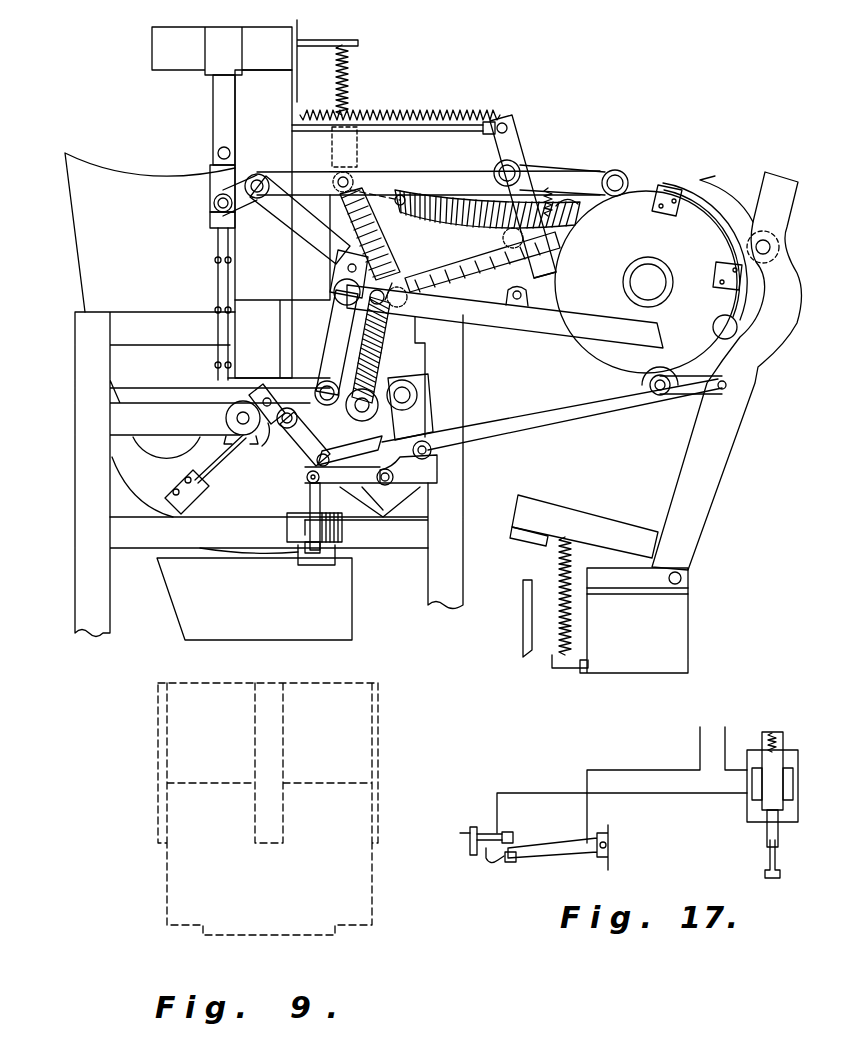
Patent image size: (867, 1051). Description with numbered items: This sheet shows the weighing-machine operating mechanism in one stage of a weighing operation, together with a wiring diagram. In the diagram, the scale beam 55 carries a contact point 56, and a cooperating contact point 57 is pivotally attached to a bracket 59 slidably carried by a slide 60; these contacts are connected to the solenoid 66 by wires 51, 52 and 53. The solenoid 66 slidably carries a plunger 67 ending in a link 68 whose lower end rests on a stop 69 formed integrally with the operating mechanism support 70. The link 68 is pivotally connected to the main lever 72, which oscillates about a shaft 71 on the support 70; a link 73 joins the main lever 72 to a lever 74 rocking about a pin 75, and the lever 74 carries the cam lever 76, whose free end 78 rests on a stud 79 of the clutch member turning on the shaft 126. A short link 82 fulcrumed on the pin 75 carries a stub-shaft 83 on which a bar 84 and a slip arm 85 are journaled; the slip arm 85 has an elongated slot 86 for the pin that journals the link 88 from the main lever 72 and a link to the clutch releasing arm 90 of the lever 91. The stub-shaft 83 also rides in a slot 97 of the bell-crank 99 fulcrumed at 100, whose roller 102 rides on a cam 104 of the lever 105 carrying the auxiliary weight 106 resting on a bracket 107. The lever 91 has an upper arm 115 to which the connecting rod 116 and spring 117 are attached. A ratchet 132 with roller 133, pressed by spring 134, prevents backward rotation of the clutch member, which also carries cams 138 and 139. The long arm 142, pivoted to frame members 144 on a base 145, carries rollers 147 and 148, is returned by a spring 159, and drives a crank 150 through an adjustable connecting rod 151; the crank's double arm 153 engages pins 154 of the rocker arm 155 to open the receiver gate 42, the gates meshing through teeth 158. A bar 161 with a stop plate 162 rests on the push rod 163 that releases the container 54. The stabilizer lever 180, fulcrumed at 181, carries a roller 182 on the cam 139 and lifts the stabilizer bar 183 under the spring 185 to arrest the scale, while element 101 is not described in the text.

In FIG. 9, the receiver gate 42 is at (208, 464).
In FIG. 17, the wire 51 is at (664, 793).
In FIG. 17, the wire 52 is at (645, 770).
In FIG. 17, the wire 53 is at (728, 740).
In FIG. 17, the container 54 is at (360, 756).
In FIG. 17, the beam 55 is at (568, 853).
In FIG. 17, the contact point 56 is at (510, 863).
In FIG. 17, the contact point 57 is at (514, 836).
In FIG. 17, the bracket 59 is at (486, 856).
In FIG. 17, the slide 60 is at (460, 833).
In FIG. 17, the solenoid 66 is at (792, 778).
In FIG. 9, the plunger 67 is at (213, 101).
In FIG. 17, the plunger 67 is at (780, 832).
In FIG. 9, the link 68 is at (212, 181).
In FIG. 17, the link 68 is at (780, 856).
In FIG. 9, the stop 69 is at (212, 215).
In FIG. 9, the operating mechanism support 70 is at (272, 271).
In FIG. 9, the shaft 71 is at (494, 176).
In FIG. 9, the main lever 72 is at (458, 187).
In FIG. 9, the link 73 is at (290, 226).
In FIG. 9, the lever 74 is at (328, 340).
In FIG. 9, the pin 75 is at (322, 385).
In FIG. 9, the cam lever 76 is at (507, 321).
In FIG. 9, the free end 78 is at (655, 335).
In FIG. 9, the stud 79 is at (713, 325).
In FIG. 9, the short link 82 is at (298, 418).
In FIG. 9, the stub-shaft 83 is at (360, 412).
In FIG. 9, the bar 84 is at (335, 290).
In FIG. 9, the slip arm 85 is at (386, 356).
In FIG. 9, the elongated slot 86 is at (390, 330).
In FIG. 9, the link 88 is at (378, 238).
In FIG. 9, the clutch releasing arm 90 is at (550, 268).
In FIG. 9, the lever 91 is at (500, 200).
In FIG. 9, the slot 97 is at (378, 450).
In FIG. 9, the bell-crank 99 is at (410, 385).
In FIG. 9, the fulcrum 100 is at (410, 395).
In FIG. 9, the block 101 is at (418, 416).
In FIG. 9, the roller 102 is at (432, 448).
In FIG. 9, the cam 104 is at (440, 468).
In FIG. 9, the lever 105 is at (362, 484).
In FIG. 9, the auxiliary weight 106 is at (344, 533).
In FIG. 9, the bracket 107 is at (315, 565).
In FIG. 9, the upper arm 115 is at (514, 140).
In FIG. 9, the connecting rod 116 is at (432, 125).
In FIG. 9, the spring 117 is at (382, 107).
In FIG. 9, the shaft 126 is at (648, 265).
In FIG. 9, the ratchet 132 is at (556, 172).
In FIG. 9, the roller 133 is at (616, 170).
In FIG. 9, the spring 134 is at (552, 196).
In FIG. 9, the cam 138 is at (684, 178).
In FIG. 9, the cam 139 is at (718, 178).
In FIG. 9, the long arm 142 is at (722, 458).
In FIG. 9, the frame member 144 is at (685, 580).
In FIG. 9, the base 145 is at (680, 637).
In FIG. 9, the roller 147 is at (780, 248).
In FIG. 9, the roller 148 is at (656, 400).
In FIG. 9, the crank 150 is at (310, 456).
In FIG. 9, the adjustable connecting rod 151 is at (550, 418).
In FIG. 9, the double arm 153 is at (275, 390).
In FIG. 9, the pins 154 is at (262, 400).
In FIG. 9, the rocker arm 155 is at (262, 446).
In FIG. 9, the teeth 158 is at (242, 437).
In FIG. 9, the spring 159 is at (558, 565).
In FIG. 9, the bar 161 is at (600, 518).
In FIG. 9, the stop plate 162 is at (540, 540).
In FIG. 9, the push rod 163 is at (523, 620).
In FIG. 9, the lever 180 is at (460, 226).
In FIG. 9, the fulcrum 181 is at (348, 192).
In FIG. 9, the roller 182 is at (566, 210).
In FIG. 9, the stabilizer bar 183 is at (334, 148).
In FIG. 9, the spring 185 is at (350, 62).